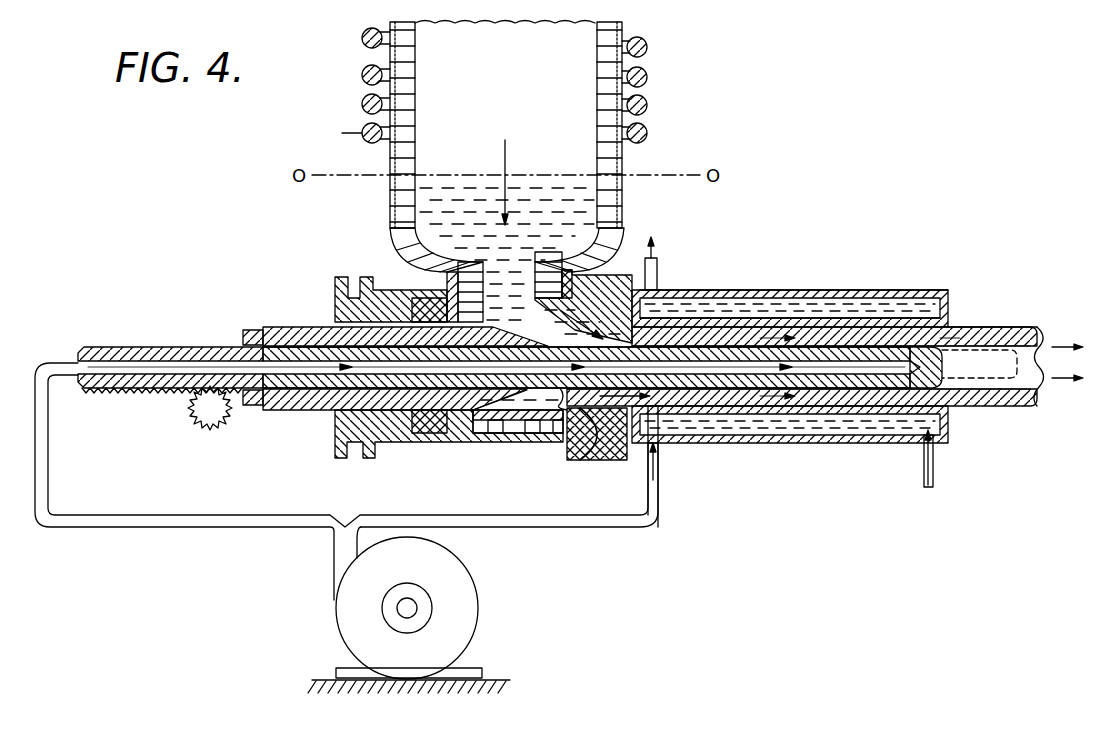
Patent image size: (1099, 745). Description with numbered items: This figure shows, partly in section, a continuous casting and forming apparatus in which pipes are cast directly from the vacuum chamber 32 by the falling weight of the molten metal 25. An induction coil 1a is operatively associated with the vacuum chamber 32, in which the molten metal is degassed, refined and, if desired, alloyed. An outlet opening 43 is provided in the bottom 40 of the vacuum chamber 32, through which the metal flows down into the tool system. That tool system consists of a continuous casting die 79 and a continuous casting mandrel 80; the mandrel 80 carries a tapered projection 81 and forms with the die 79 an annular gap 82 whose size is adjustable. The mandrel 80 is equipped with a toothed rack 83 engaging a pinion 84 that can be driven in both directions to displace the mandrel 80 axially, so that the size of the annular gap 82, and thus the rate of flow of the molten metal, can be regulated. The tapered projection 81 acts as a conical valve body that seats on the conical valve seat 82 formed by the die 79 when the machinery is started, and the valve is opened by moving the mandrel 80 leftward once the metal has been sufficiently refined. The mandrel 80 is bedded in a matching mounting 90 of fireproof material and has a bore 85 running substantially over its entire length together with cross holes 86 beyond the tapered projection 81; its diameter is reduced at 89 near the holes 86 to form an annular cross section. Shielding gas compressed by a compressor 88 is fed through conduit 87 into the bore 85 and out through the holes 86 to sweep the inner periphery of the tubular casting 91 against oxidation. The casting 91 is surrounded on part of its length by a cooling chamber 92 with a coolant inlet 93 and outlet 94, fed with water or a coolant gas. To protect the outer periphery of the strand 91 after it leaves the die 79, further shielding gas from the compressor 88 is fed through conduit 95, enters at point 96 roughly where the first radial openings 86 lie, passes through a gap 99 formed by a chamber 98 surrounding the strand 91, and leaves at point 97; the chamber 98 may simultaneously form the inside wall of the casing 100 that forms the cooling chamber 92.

The induction coil 1a is at (365, 80).
The vacuum chamber 32 is at (572, 77).
The molten metal 25 is at (455, 203).
The bottom of the vacuum chamber 40 is at (553, 241).
The outlet opening 43 is at (497, 276).
The mounting 90 is at (390, 405).
The bore 85 is at (468, 372).
The tapered projection 81 is at (527, 388).
The continuous casting mandrel 80 is at (560, 382).
The annular gap 82 is at (590, 415).
The continuous casting die 79 is at (598, 435).
The casting 91 is at (970, 406).
The casing 100 is at (922, 326).
The cross holes 86 is at (880, 375).
The outlet point 97 is at (948, 328).
The reduced-diameter portion 89 is at (702, 350).
The toothed rack 83 is at (135, 390).
The pinion 84 is at (225, 415).
The conduit 87 is at (36, 430).
The compressor 88 is at (470, 610).
The cooling chamber 92 is at (790, 300).
The chamber 98 is at (845, 290).
The gap 99 is at (885, 320).
The outlet 94 is at (657, 264).
The inlet 93 is at (925, 468).
The entry point 96 is at (657, 430).
The conduit 95 is at (658, 468).